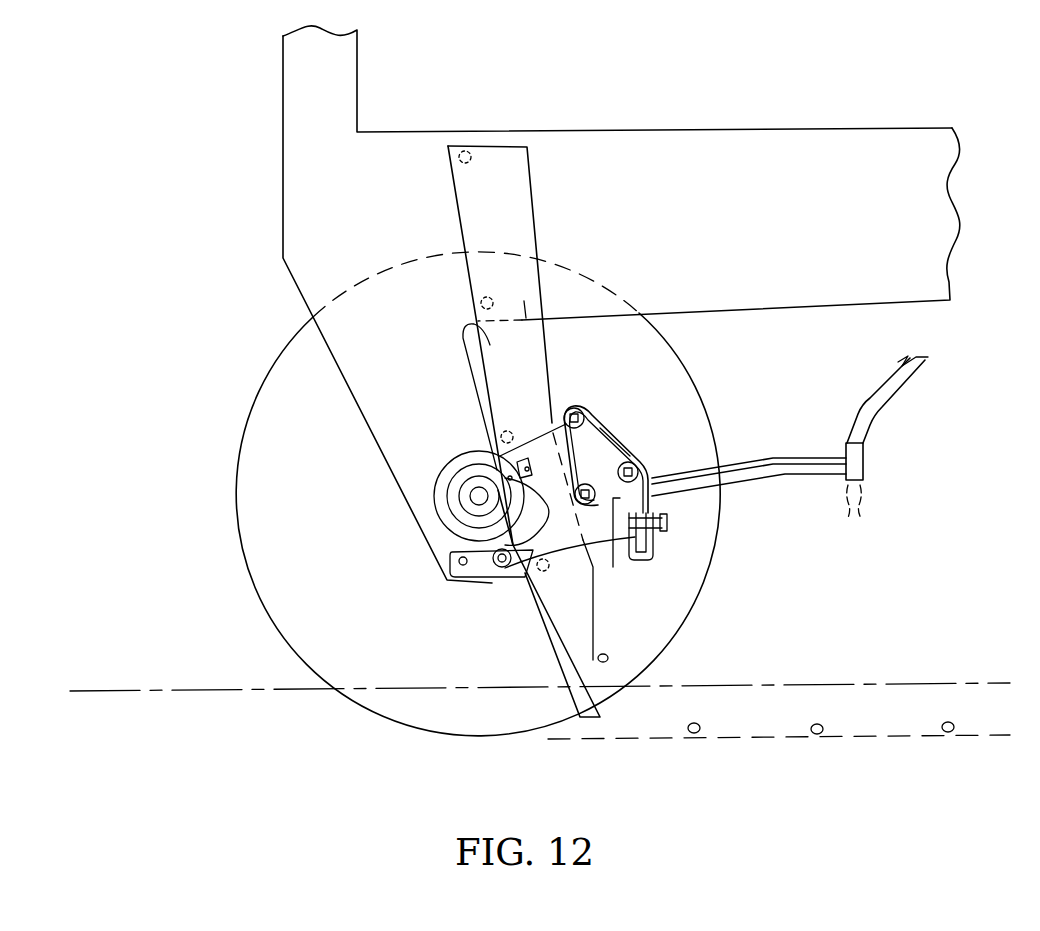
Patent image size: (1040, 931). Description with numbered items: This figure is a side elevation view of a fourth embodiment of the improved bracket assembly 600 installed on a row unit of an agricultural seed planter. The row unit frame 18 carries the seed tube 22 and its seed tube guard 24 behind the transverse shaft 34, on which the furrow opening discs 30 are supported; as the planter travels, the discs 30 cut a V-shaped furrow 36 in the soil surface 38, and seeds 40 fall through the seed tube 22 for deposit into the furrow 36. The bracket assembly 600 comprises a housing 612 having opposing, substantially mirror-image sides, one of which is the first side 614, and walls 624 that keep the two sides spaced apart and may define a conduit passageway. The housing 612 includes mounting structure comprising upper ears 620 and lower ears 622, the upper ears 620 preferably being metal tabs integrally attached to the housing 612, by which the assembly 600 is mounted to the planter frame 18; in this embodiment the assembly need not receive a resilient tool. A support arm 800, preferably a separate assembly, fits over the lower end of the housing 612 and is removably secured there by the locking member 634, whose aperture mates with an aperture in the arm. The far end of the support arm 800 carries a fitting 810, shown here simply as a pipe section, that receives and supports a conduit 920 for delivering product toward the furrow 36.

The row unit frame 18 is at (847, 133).
The seed tube 22 is at (495, 348).
The seed tube guard 24 is at (527, 627).
The furrow opening discs 30 is at (247, 509).
The transverse shaft 34 is at (476, 498).
The furrow 36 is at (762, 730).
The soil surface 38 is at (168, 689).
The seeds 40 is at (447, 167).
The improved bracket assembly 600 is at (603, 452).
The housing 612 is at (605, 428).
The first side 614 is at (631, 449).
The upper ears 620 is at (478, 488).
The lower ears 622 is at (524, 574).
The walls 624 is at (582, 413).
The locking member 634 is at (655, 532).
The support arm 800 is at (780, 480).
The fitting 810 is at (863, 463).
The conduit 920 is at (920, 367).